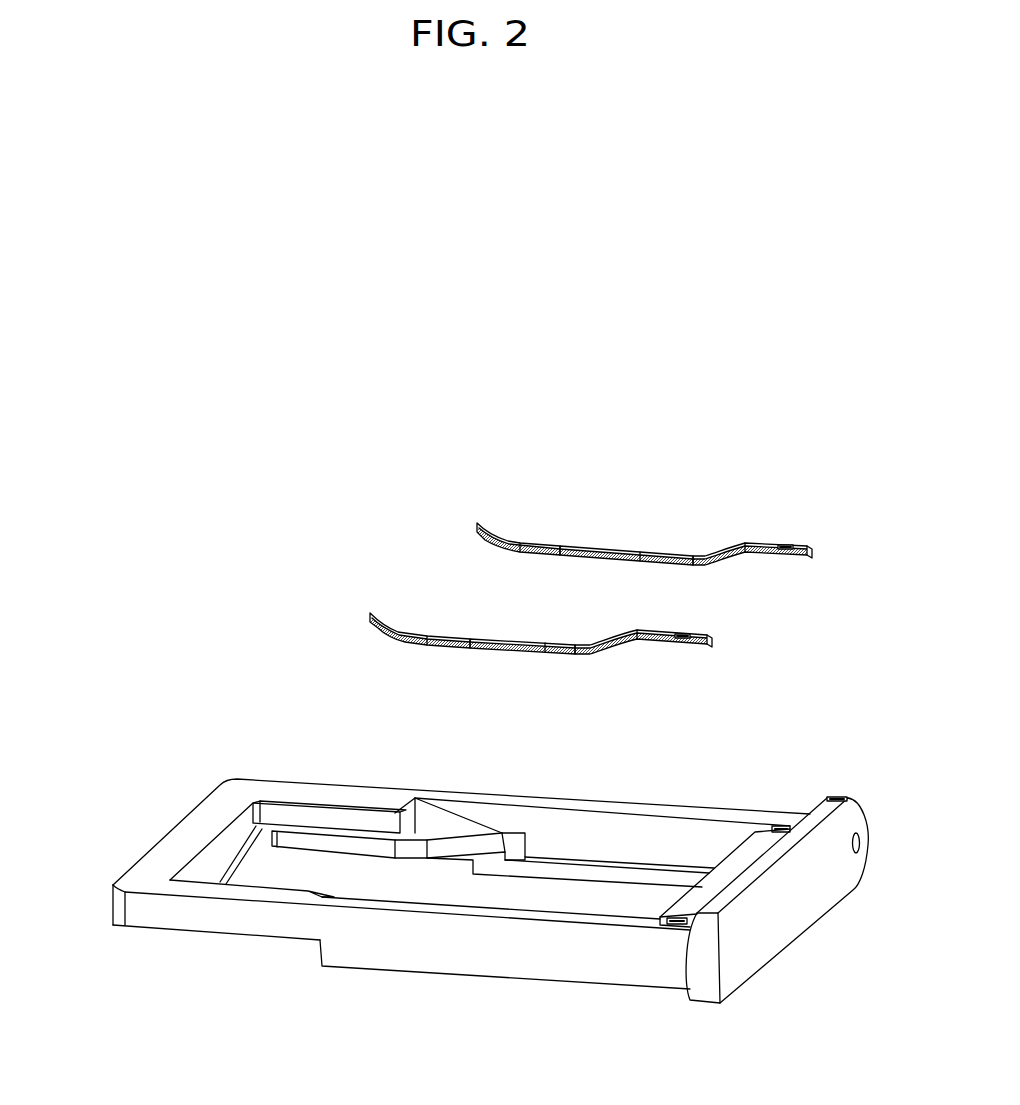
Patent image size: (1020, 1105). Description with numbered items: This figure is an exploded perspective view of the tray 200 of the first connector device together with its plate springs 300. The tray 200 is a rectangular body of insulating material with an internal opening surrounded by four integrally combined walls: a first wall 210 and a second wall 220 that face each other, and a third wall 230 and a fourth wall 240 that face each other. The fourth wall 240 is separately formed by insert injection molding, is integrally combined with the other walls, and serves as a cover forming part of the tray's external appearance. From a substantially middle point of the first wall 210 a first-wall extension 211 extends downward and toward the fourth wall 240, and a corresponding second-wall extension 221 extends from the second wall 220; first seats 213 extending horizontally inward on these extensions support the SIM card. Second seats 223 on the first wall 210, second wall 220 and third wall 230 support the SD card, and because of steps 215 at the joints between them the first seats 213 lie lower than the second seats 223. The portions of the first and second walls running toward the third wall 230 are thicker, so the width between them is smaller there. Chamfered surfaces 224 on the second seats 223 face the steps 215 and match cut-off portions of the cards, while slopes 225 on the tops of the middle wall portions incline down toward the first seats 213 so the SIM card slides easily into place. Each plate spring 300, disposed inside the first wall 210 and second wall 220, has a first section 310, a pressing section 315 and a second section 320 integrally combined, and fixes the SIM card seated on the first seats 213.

The tray 200 is at (113, 907).
The first wall 210 is at (240, 917).
The 1-1 extension 211 is at (540, 970).
The first seats 213 is at (630, 867).
The steps 215 is at (517, 847).
The second wall 220 is at (580, 820).
The 2-1 extension 221 is at (667, 850).
The second seats 223 is at (423, 808).
The chamfered surfaces 224 is at (467, 847).
The slopes 225 is at (423, 808).
The third wall 230 is at (180, 833).
The fourth wall 240 is at (797, 903).
The plate springs 300 is at (807, 440).
The first section 310 is at (650, 630).
The pressing section 315 is at (508, 642).
The second section 320 is at (405, 627).